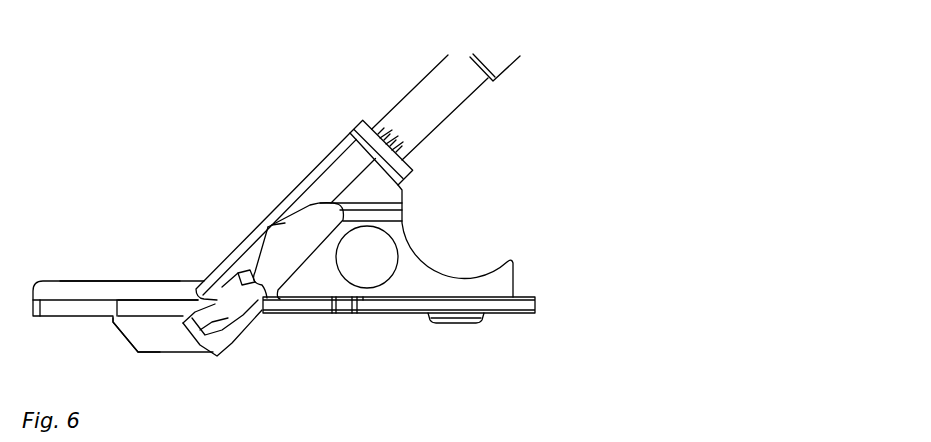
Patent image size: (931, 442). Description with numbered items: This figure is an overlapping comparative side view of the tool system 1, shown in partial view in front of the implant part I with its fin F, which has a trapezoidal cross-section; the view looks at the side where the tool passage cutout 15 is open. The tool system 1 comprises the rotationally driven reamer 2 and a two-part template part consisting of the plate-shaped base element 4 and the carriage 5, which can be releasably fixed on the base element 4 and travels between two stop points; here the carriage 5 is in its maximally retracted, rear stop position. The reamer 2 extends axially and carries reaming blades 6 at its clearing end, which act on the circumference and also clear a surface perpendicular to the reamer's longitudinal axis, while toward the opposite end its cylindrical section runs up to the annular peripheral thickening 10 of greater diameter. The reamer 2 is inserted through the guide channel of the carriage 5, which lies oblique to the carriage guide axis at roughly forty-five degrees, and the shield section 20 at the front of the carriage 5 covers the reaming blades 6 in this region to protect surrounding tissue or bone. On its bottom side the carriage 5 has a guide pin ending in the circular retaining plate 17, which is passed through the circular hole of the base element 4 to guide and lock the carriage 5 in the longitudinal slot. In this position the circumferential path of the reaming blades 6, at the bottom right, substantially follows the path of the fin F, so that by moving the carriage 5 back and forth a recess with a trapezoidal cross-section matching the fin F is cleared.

The tool system 1 is at (241, 132).
The reamer 2 is at (412, 81).
The base element 4 is at (77, 313).
The carriage 5 is at (400, 248).
The reaming blades 6 is at (230, 337).
The annular peripheral thickening 10 is at (357, 122).
The tool passage cutout 15 is at (143, 303).
The circular retaining plate 17 is at (455, 322).
The shield section 20 is at (233, 253).
The fin F is at (152, 345).
The implant part I is at (84, 290).